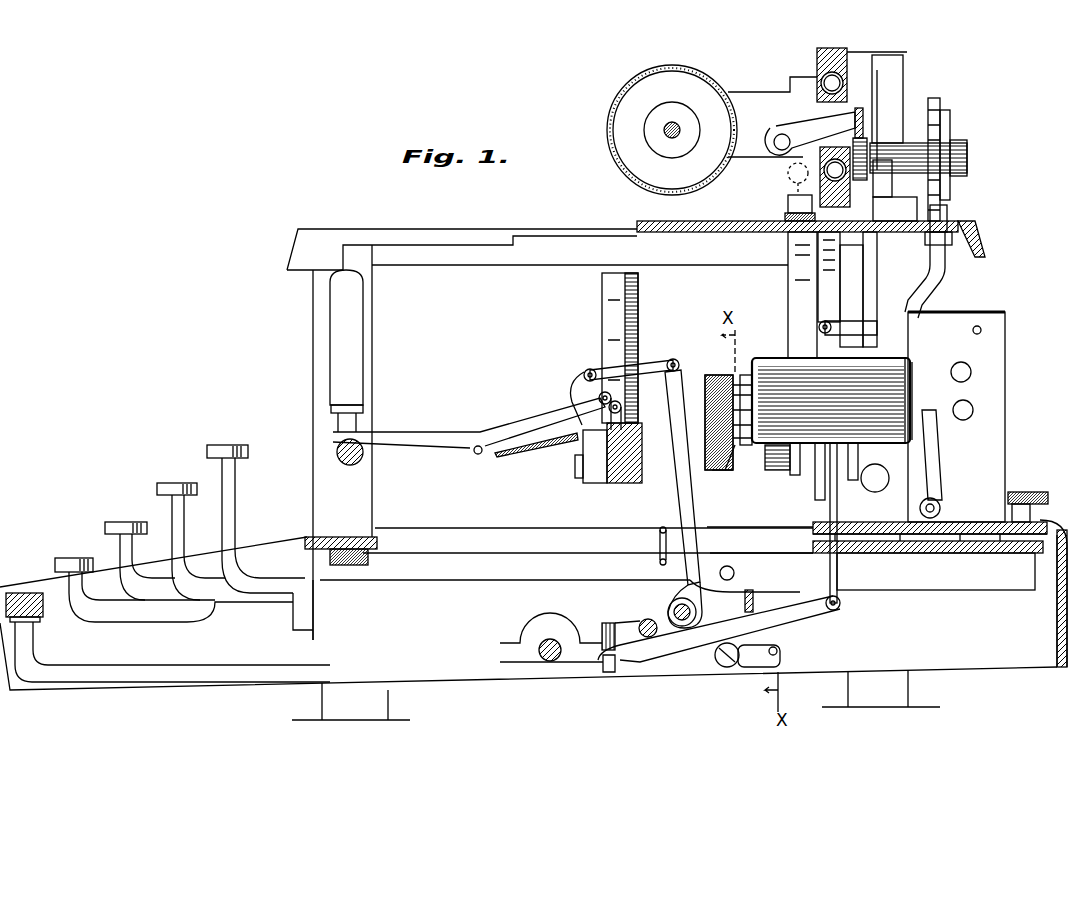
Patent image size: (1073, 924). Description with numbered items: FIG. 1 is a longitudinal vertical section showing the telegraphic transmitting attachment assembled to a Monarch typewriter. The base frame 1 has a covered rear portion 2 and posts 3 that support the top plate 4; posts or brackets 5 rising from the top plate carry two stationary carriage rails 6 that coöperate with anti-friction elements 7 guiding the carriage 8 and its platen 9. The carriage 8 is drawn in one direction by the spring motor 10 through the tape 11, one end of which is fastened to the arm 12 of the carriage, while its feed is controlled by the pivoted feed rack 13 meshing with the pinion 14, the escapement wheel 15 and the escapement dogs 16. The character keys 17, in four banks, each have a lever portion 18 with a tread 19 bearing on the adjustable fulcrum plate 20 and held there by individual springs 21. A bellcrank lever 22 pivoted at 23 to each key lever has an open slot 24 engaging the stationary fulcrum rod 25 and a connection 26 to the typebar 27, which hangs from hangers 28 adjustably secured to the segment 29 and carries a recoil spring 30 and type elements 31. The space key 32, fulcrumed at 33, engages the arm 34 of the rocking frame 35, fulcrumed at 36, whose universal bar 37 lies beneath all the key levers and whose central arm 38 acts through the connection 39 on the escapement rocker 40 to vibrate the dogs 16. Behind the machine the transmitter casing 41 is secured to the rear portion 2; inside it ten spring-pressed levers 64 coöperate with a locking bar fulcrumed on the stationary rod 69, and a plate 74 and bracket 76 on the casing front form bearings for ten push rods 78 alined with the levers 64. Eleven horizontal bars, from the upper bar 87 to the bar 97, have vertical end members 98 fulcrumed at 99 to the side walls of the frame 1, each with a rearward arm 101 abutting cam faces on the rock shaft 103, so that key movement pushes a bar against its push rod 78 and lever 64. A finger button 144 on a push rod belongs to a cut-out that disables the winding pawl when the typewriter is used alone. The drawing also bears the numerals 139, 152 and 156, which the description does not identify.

The base frame 1 is at (285, 537).
The covered rear portion 2 is at (970, 522).
The posts 3 is at (312, 358).
The top plate 4 is at (463, 232).
The posts or brackets 5 is at (897, 85).
The stationary carriage rails 6 is at (831, 48).
The anti-friction elements 7 is at (836, 80).
The carriage 8 is at (760, 100).
The platen 9 is at (671, 67).
The spring motor 10 is at (788, 277).
The tape 11 is at (787, 203).
The arm of the carriage 12 is at (787, 173).
The pivoted feed rack 13 is at (863, 118).
The pinion 14 is at (866, 145).
The escapement wheel 15 is at (938, 108).
The escapement dogs 16 is at (947, 215).
The character keys 17 is at (228, 445).
The key lever 18 is at (452, 580).
The tread 19 is at (968, 555).
The adjustable fulcrum plate 20 is at (913, 547).
The individual springs 21 is at (765, 520).
The bellcrank lever 22 is at (686, 495).
The pivot 23 is at (736, 573).
The open slot 24 is at (690, 606).
The stationary fulcrum rod 25 is at (672, 608).
The connection 26 is at (668, 358).
The typebar 27 is at (447, 433).
The hangers 28 is at (598, 445).
The segment 29 is at (602, 312).
The recoil spring 30 is at (502, 452).
The type elements 31 is at (366, 400).
The space key 32 is at (18, 593).
The fulcrum of space key 33 is at (548, 661).
The arm of rocking frame 34 is at (600, 622).
The rocking frame 35 is at (685, 650).
The fulcrum of rocking frame 36 is at (648, 638).
The universal bar 37 is at (753, 603).
The central arm 38 is at (831, 610).
The connection 39 is at (838, 570).
The escapement rocker 40 is at (965, 273).
The casing 41 is at (956, 417).
The levers 64 is at (930, 478).
The stationary rod 69 is at (977, 326).
The plate 74 is at (910, 365).
The bracket 76 is at (764, 368).
The push rods 78 is at (769, 459).
The upper bar 87 is at (700, 375).
The bar 97 is at (723, 459).
The vertically disposed members 98 is at (723, 483).
The fulcrum 99 is at (726, 668).
The horizontal arm 101 is at (752, 668).
The rock shaft 103 is at (775, 648).
The block 139 is at (840, 289).
The finger button 144 is at (874, 464).
The hole 152 is at (963, 420).
The hole 156 is at (961, 362).